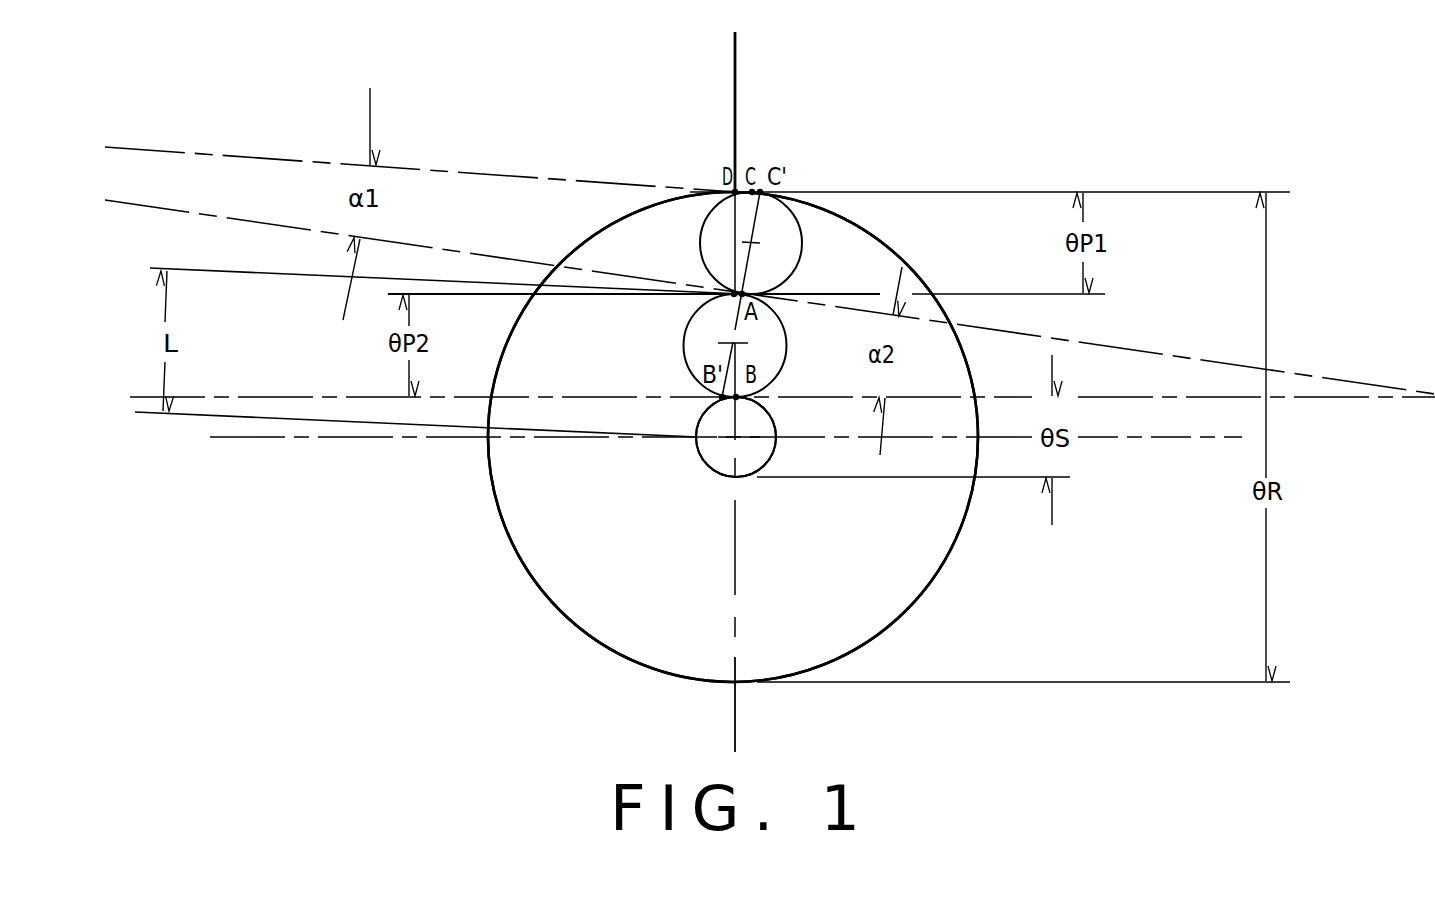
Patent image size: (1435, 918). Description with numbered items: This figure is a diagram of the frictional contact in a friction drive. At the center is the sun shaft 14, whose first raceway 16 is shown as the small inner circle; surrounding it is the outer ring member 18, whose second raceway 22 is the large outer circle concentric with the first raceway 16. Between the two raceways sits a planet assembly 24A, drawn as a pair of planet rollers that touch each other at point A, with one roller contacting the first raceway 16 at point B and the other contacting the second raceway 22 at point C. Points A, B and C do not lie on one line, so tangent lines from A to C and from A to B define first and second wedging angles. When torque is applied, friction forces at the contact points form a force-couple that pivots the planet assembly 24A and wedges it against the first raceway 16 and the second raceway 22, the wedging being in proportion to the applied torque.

The planet assembly 24A is at (813, 241).
The sun shaft 14 is at (768, 463).
The first raceway 16 is at (707, 465).
The outer ring member 18 is at (686, 679).
The second raceway 22 is at (572, 610).